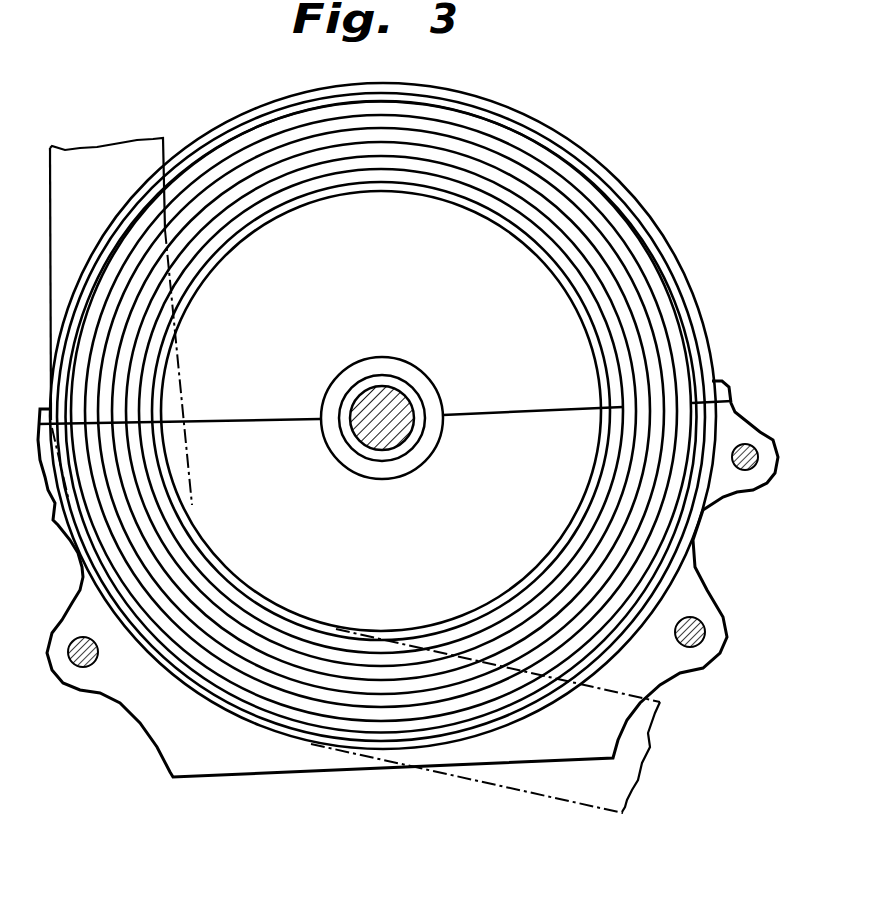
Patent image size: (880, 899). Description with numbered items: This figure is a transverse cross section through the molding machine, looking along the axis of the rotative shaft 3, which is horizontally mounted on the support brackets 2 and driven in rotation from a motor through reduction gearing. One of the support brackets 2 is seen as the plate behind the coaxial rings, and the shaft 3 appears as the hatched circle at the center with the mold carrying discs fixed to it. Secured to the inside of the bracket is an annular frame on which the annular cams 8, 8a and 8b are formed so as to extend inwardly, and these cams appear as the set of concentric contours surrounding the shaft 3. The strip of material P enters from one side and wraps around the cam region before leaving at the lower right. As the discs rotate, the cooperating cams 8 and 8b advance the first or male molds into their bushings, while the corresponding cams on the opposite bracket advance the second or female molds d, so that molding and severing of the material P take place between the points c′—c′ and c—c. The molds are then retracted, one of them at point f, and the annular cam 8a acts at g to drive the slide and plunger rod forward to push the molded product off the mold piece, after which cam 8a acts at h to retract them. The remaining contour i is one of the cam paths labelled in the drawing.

The material P is at (137, 152).
The support bracket 2 is at (693, 602).
The rotative shaft 3 is at (403, 435).
The annular cam 8 is at (137, 382).
The annular cam 8a is at (127, 324).
The annular cam 8b is at (83, 408).
The points c— c is at (87, 580).
The points c′— c′ is at (42, 503).
The second or female molds d is at (143, 615).
The point f is at (192, 628).
The point g is at (227, 657).
The point h is at (277, 687).
The coil turn i is at (296, 640).